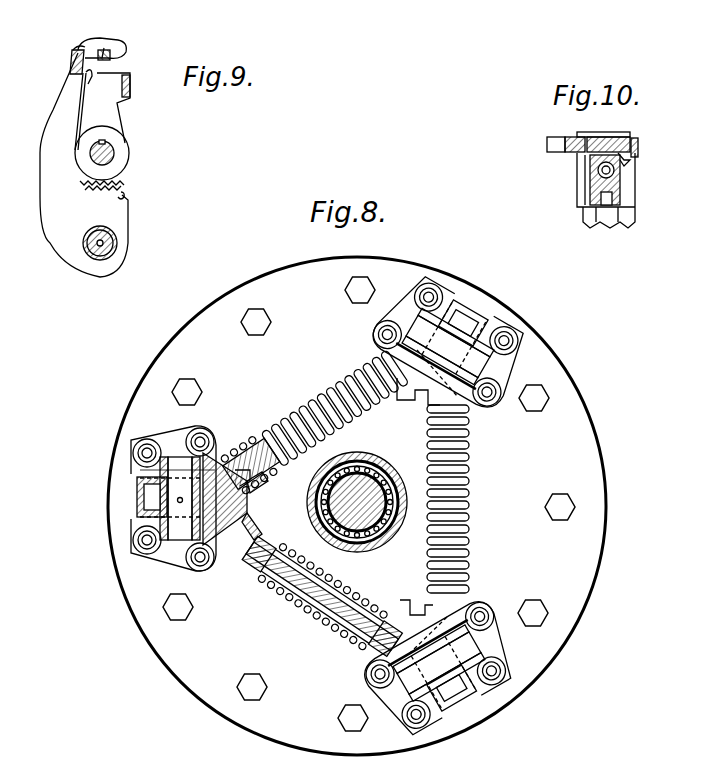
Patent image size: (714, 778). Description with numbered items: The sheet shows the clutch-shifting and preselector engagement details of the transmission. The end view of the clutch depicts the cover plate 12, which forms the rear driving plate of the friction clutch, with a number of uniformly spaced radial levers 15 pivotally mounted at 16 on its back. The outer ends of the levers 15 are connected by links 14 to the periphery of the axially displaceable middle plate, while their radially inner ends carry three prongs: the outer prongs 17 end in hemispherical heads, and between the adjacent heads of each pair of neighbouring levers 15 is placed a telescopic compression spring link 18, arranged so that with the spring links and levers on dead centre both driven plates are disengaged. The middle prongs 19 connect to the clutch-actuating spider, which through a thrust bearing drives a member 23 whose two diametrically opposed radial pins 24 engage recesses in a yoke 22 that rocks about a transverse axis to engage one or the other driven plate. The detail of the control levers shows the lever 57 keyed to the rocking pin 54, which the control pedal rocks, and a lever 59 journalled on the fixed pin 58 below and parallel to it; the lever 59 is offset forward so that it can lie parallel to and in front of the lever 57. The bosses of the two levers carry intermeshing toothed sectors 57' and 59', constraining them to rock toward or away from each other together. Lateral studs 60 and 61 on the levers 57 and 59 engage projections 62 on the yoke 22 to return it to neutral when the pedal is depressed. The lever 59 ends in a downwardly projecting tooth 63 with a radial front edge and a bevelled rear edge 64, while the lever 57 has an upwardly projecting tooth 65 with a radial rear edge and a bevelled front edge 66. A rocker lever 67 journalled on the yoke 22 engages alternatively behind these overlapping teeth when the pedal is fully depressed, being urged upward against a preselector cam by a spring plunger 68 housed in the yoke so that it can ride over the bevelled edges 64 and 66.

In FIG. 8, the cover plate 12 is at (357, 506).
In FIG. 8, the links 14 is at (138, 500).
In FIG. 8, the radial levers 15 is at (132, 492).
In FIG. 8, the pivot 16 is at (176, 458).
In FIG. 8, the outer prongs 17 is at (212, 445).
In FIG. 8, the telescopic compression spring link 18 is at (312, 404).
In FIG. 8, the middle prongs 19 is at (398, 402).
In FIG. 10, the yoke 22 is at (633, 191).
In FIG. 10, the member 23 is at (620, 224).
In FIG. 10, the radial pins 24 is at (600, 195).
In FIG. 9, the rocking pin 54 is at (115, 154).
In FIG. 9, the lever 57 is at (117, 126).
In FIG. 10, the lever 57 is at (653, 145).
In FIG. 9, the toothed sector 57' is at (123, 175).
In FIG. 9, the fixed pin 58 is at (118, 242).
In FIG. 9, the lever 59 is at (69, 165).
In FIG. 10, the lever 59 is at (570, 142).
In FIG. 9, the toothed sector 59' is at (125, 195).
In FIG. 9, the lateral stud 60 is at (131, 89).
In FIG. 10, the lateral stud 60 is at (630, 160).
In FIG. 9, the lateral stud 61 is at (74, 60).
In FIG. 10, the projections 62 is at (625, 174).
In FIG. 9, the downwardly projecting tooth 63 is at (122, 48).
In FIG. 9, the bevelled rear edge 64 is at (112, 54).
In FIG. 9, the upwardly projecting tooth 65 is at (82, 82).
In FIG. 9, the bevelled front edge 66 is at (76, 47).
In FIG. 9, the rocker lever 67 is at (108, 46).
In FIG. 10, the spring plunger 68 is at (598, 171).